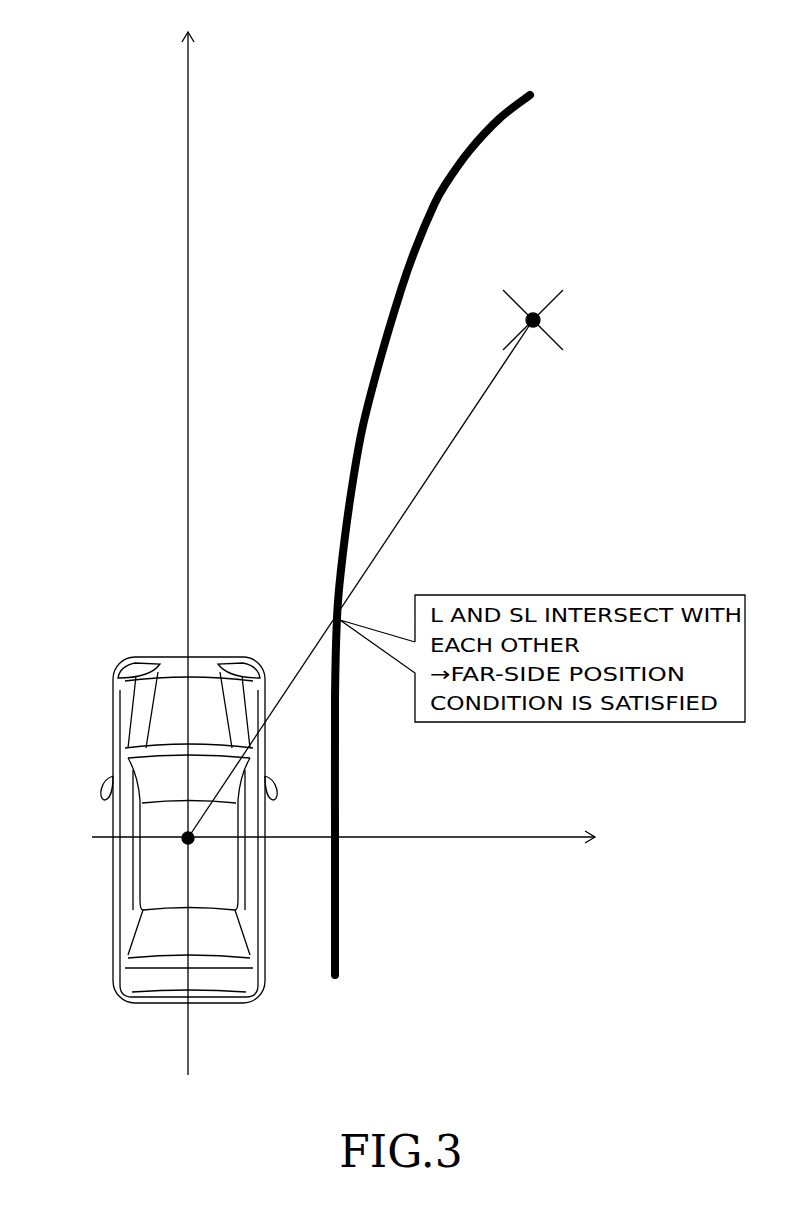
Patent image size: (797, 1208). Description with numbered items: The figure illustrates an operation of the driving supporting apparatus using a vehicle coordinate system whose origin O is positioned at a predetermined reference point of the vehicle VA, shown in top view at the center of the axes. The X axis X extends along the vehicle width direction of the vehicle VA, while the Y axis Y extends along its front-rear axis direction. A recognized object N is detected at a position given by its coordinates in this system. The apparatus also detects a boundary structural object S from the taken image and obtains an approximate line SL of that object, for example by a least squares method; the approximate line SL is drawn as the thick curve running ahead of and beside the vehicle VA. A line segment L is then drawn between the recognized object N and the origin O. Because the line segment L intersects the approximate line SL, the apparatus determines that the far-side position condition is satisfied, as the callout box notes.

The boundary structural object S is at (424, 535).
The approximate line SL is at (428, 205).
The recognized object N is at (533, 312).
The line segment L is at (480, 403).
The vehicle VA is at (150, 778).
The origin O is at (188, 838).
The X axis X is at (361, 839).
The Y axis Y is at (188, 541).